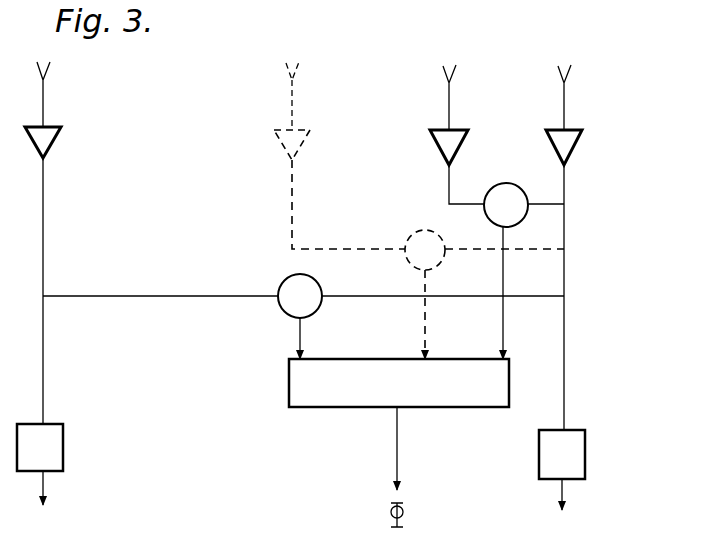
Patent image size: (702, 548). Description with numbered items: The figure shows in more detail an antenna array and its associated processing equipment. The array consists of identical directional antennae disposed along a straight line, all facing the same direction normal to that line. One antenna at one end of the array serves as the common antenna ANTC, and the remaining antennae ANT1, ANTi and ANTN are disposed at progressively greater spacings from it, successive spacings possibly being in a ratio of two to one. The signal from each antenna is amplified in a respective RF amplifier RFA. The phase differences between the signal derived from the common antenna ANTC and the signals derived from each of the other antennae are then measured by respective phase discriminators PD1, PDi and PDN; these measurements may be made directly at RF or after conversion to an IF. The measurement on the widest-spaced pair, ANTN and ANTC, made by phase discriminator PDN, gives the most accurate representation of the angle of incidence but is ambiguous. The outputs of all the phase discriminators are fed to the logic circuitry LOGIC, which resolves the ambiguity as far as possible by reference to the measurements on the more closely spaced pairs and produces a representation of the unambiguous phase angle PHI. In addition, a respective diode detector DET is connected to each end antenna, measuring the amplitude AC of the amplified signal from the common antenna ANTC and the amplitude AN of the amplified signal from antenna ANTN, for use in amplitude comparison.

The antenna N ANTN is at (46, 77).
The antenna i ANTi is at (295, 77).
The antenna 1 ANT1 is at (452, 80).
The common antenna ANTC is at (567, 80).
The RF amplifier RFA is at (47, 147).
The phase discriminator 1 PD1 is at (518, 218).
The phase discriminator i PDi is at (434, 267).
The phase discriminator N PDN is at (312, 310).
The logic circuitry LOGIC is at (399, 383).
The diode detector DET is at (301, 451).
The amplitude A_N AN is at (41, 504).
The amplitude A_C AC is at (561, 510).
The unambiguous phase angle PHI is at (397, 515).